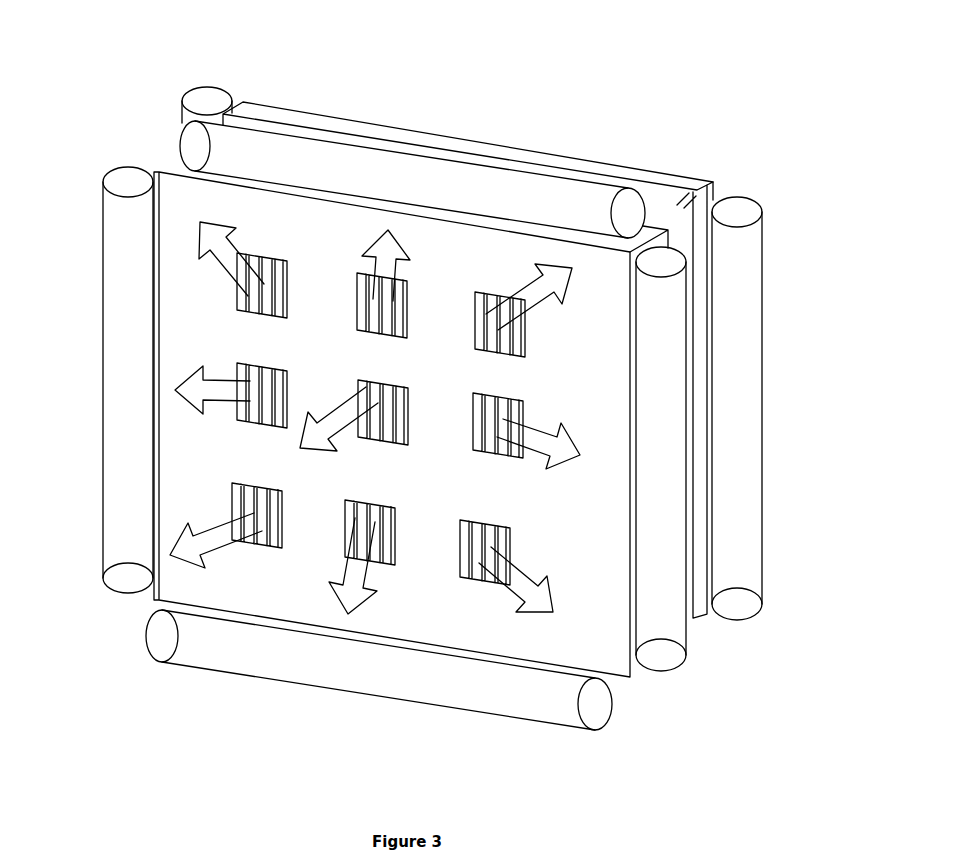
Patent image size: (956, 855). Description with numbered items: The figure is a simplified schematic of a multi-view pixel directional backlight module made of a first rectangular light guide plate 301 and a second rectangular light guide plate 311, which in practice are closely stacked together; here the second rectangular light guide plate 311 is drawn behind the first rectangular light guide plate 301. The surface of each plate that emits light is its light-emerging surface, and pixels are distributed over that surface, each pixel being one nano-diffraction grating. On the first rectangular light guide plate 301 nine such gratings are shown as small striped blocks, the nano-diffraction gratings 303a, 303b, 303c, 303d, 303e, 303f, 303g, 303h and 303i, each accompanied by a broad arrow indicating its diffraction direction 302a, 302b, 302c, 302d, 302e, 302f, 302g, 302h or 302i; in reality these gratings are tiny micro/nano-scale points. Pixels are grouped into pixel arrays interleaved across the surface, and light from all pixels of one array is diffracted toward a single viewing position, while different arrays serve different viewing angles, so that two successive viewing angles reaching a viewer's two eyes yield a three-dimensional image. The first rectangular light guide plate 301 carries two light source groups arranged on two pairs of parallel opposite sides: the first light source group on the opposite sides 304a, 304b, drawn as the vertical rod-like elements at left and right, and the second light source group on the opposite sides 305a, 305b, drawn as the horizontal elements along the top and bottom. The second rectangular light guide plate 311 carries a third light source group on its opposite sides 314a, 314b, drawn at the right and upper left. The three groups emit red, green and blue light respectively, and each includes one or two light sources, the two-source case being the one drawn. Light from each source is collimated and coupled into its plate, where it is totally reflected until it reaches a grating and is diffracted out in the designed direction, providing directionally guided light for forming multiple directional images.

The first rectangular light guide plate 301 is at (593, 617).
The diffraction direction 302a is at (207, 243).
The diffraction direction 302b is at (395, 250).
The diffraction direction 302c is at (547, 285).
The diffraction direction 302d is at (180, 385).
The diffraction direction 302e is at (338, 410).
The diffraction direction 302f is at (572, 445).
The diffraction direction 302g is at (176, 530).
The diffraction direction 302h is at (334, 582).
The diffraction direction 302i is at (530, 590).
The nano-diffraction grating 303a is at (268, 300).
The nano-diffraction grating 303b is at (395, 325).
The nano-diffraction grating 303c is at (513, 342).
The nano-diffraction grating 303d is at (243, 421).
The nano-diffraction grating 303e is at (400, 400).
The nano-diffraction grating 303f is at (497, 415).
The nano-diffraction grating 303g is at (258, 498).
The nano-diffraction grating 303h is at (390, 520).
The nano-diffraction grating 303i is at (510, 533).
The opposite side 304a is at (655, 572).
The opposite side 304b is at (112, 462).
The opposite side 305a is at (228, 165).
The opposite side 305b is at (360, 663).
The second rectangular light guide plate 311 is at (717, 182).
The opposite side 314a is at (730, 303).
The opposite side 314b is at (210, 100).